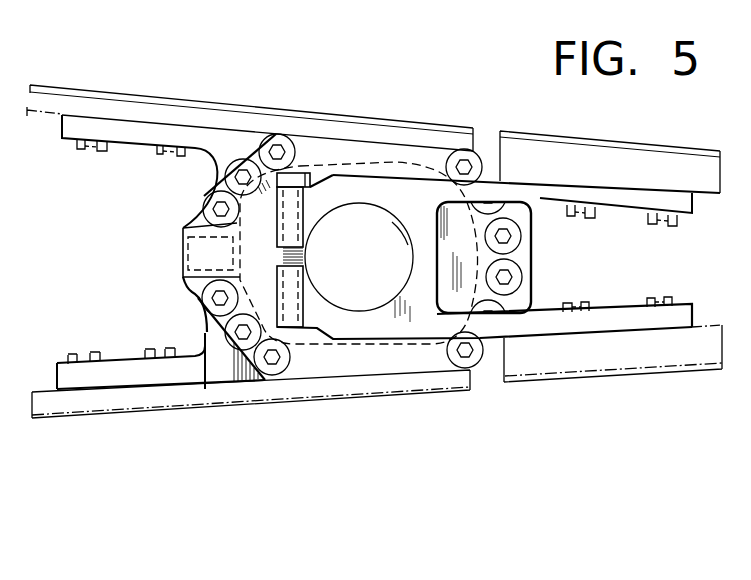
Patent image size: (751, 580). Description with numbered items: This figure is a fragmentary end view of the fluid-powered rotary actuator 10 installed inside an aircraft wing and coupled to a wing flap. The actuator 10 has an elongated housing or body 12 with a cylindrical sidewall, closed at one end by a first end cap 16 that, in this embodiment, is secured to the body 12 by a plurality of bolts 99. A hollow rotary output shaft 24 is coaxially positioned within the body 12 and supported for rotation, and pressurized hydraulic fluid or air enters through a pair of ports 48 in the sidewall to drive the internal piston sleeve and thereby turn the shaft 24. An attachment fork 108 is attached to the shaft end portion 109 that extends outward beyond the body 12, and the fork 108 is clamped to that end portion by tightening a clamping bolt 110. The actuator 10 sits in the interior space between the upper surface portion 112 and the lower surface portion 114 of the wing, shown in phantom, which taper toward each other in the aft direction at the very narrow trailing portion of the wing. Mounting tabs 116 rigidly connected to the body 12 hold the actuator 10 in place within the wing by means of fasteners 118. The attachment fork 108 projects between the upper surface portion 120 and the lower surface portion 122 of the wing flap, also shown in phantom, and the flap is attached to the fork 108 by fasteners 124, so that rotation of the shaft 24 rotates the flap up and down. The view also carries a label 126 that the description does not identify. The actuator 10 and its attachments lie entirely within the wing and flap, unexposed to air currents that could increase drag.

The fluid-powered rotary actuator 10 is at (448, 396).
The housing or body 12 is at (270, 137).
The first end cap 16 is at (371, 150).
The rotary output shaft 24 is at (369, 269).
The ports 48 is at (190, 256).
The bolts 99 is at (278, 134).
The attachment fork 108 is at (550, 190).
The shaft end portion 109 is at (391, 221).
The clamping bolt 110 is at (296, 168).
The upper surface portion 112 is at (178, 105).
The lower surface portion 114 is at (202, 342).
The mounting tabs 116 is at (140, 127).
The fasteners 118 is at (158, 154).
The upper surface portion 120 is at (663, 160).
The lower surface portion 122 is at (687, 353).
The fasteners 124 is at (648, 298).
The guide rollers 126 is at (468, 155).